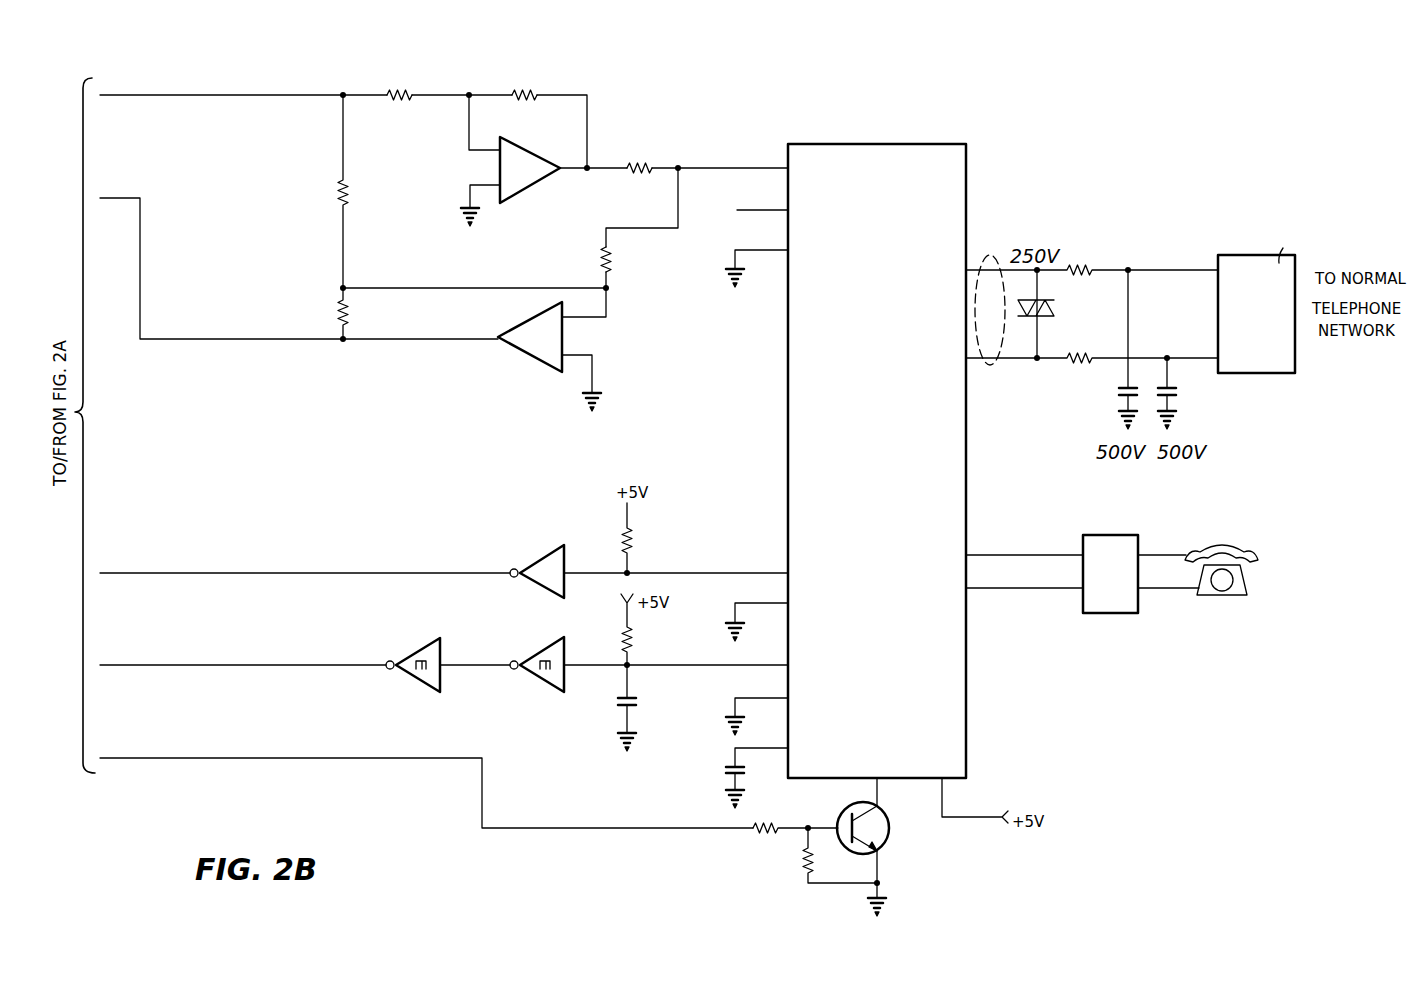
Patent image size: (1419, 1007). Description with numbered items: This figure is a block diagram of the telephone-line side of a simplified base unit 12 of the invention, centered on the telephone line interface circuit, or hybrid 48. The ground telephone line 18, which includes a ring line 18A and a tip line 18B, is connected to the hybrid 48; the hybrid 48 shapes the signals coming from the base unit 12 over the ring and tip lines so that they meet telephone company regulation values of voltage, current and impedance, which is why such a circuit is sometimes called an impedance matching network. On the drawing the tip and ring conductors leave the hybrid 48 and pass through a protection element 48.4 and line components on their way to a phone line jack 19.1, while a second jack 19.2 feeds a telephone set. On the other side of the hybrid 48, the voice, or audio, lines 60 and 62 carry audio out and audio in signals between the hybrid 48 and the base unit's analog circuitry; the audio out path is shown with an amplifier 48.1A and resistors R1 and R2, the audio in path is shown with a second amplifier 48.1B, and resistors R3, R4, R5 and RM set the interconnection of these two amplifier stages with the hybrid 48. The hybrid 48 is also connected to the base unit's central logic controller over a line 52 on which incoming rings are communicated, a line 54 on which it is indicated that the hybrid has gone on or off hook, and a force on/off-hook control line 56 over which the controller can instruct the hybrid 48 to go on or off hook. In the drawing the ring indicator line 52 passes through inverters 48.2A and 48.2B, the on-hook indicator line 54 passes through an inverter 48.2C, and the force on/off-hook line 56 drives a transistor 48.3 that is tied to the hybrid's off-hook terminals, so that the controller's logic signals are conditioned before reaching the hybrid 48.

The base unit 12 is at (883, 67).
The audio line 60 is at (270, 96).
The audio line 62 is at (140, 263).
The resistor R1 is at (399, 81).
The resistor R2 is at (524, 81).
The resistor R3 is at (355, 191).
The resistor R4 is at (355, 313).
The resistor R5 is at (618, 262).
The resistor RM is at (639, 153).
The operational amplifier 48.1A is at (537, 187).
The operational amplifier 48.1B is at (531, 355).
The hybrid 48 is at (968, 183).
The ground telephone line 18 is at (988, 256).
The ring line 18A is at (1190, 356).
The tip line 18B is at (1178, 268).
The surge protector (triac) 48.4 is at (1053, 311).
The phone line jack 19.1 is at (1270, 318).
The telephone jack 19.2 is at (1122, 540).
The line 54 is at (300, 575).
The line 52 is at (275, 668).
The force on/off-hook control line 56 is at (310, 760).
The inverter 48.2A is at (410, 656).
The inverter 48.2B is at (534, 647).
The inverter 48.2C is at (537, 556).
The transistor 48.3 is at (882, 840).